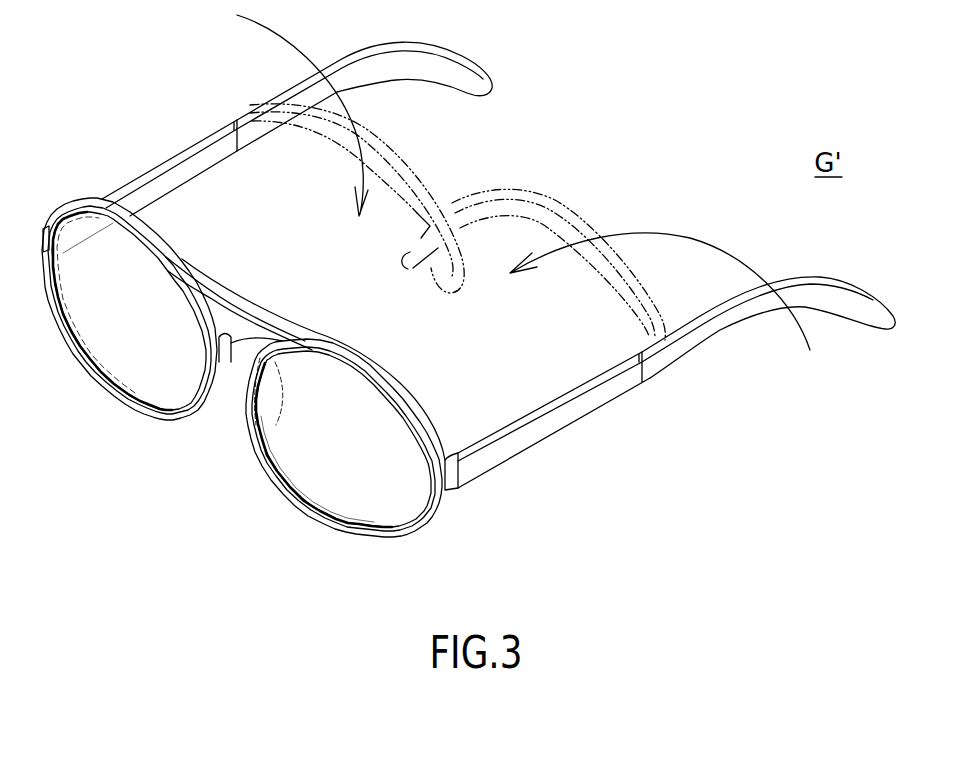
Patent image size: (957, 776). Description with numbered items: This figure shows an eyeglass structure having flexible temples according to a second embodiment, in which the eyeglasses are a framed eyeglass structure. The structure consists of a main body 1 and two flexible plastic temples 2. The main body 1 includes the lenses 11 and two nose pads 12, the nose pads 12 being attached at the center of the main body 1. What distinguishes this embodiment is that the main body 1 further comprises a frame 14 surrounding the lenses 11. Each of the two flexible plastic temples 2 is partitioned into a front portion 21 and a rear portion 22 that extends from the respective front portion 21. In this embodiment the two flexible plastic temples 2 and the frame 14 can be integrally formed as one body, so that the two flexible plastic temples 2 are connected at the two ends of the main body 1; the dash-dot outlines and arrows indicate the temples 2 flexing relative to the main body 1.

The main body 1 is at (250, 367).
The lenses 11 is at (160, 324).
The nose pads 12 is at (268, 392).
The frame 14 is at (305, 358).
The flexible plastic temples 2 is at (498, 263).
The front portion 21 is at (173, 181).
The rear portion 22 is at (557, 232).